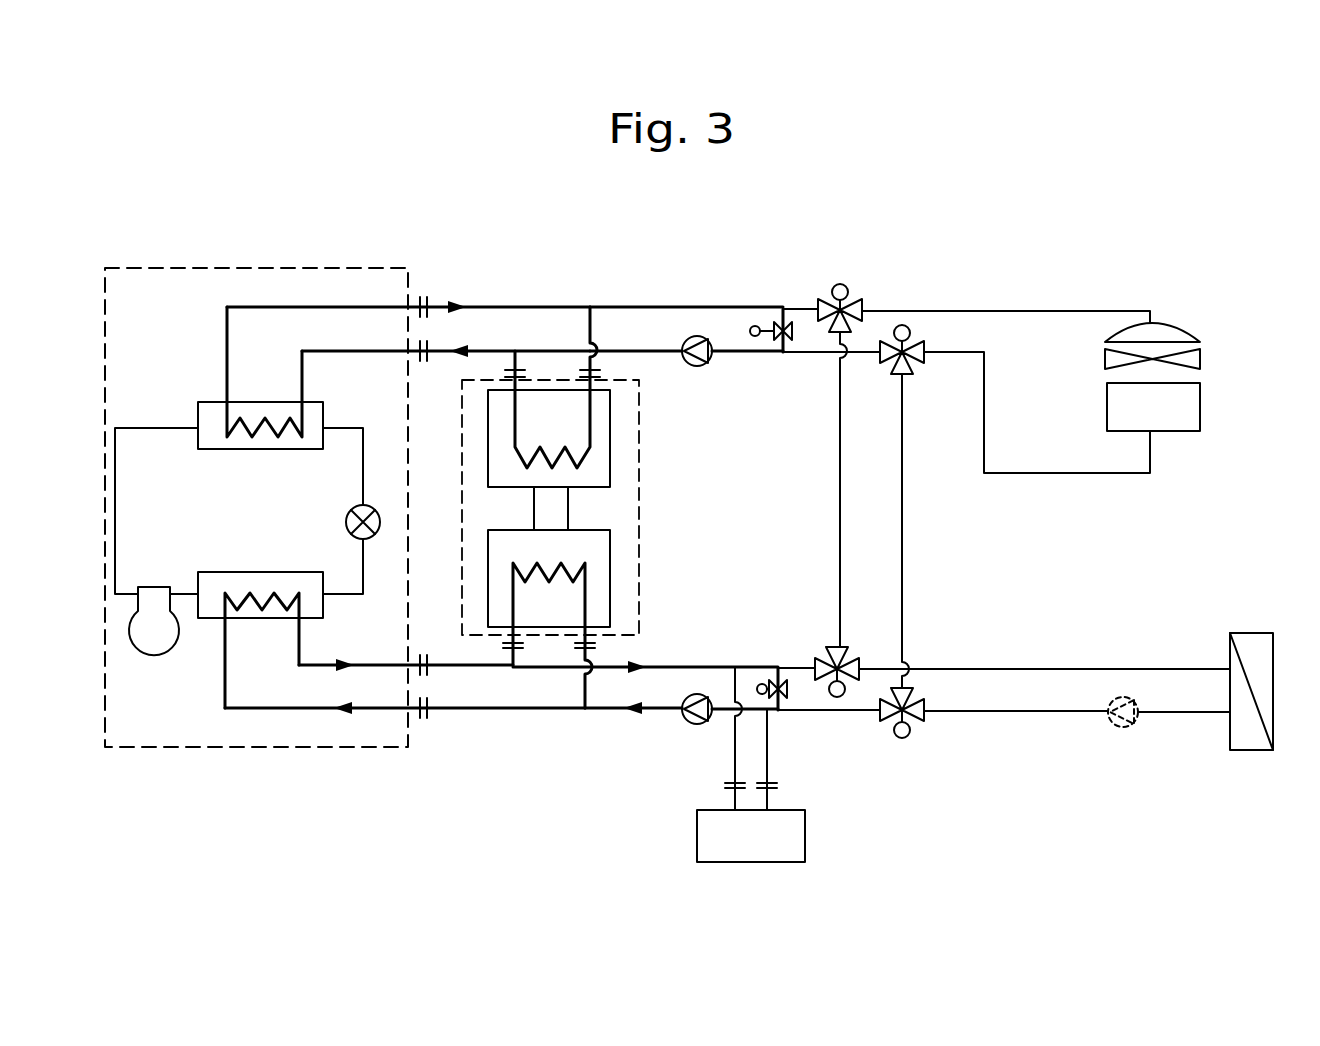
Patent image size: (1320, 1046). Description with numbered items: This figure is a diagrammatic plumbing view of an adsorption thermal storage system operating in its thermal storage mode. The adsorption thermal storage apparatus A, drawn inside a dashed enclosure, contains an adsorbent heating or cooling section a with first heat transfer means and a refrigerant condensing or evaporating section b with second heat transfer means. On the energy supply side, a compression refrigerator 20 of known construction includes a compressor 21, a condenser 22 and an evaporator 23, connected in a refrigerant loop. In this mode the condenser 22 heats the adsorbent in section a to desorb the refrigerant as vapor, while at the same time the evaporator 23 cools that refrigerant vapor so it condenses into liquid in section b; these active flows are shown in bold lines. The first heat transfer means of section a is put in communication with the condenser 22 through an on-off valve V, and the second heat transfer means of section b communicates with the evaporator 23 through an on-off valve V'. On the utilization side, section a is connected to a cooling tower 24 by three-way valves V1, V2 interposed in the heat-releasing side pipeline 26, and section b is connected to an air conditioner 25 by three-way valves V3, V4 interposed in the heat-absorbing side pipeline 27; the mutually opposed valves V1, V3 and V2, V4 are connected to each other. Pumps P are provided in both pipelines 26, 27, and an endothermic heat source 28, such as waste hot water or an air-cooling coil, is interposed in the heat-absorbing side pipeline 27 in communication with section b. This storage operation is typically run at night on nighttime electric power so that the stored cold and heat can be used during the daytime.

The compression refrigerator 20 is at (307, 267).
The compressor 21 is at (150, 587).
The condenser 22 is at (248, 450).
The evaporator 23 is at (272, 570).
The cooling tower 24 is at (1205, 366).
The air conditioner 25 is at (1247, 632).
The heat-releasing side pipeline 26 is at (501, 307).
The heat-absorbing side pipeline 27 is at (492, 712).
The endothermic heat source 28 is at (805, 838).
The adsorbent heating or cooling section a is at (610, 432).
The refrigerant condensing or evaporating section b is at (610, 567).
The adsorption thermal storage apparatus A is at (591, 507).
The pump P is at (701, 546).
The on-off valve V is at (779, 364).
The on-off valve V' is at (789, 721).
The three-way valve V1 is at (854, 453).
The three-way valve V2 is at (920, 506).
The three-way valve V3 is at (850, 655).
The three-way valve V4 is at (918, 723).